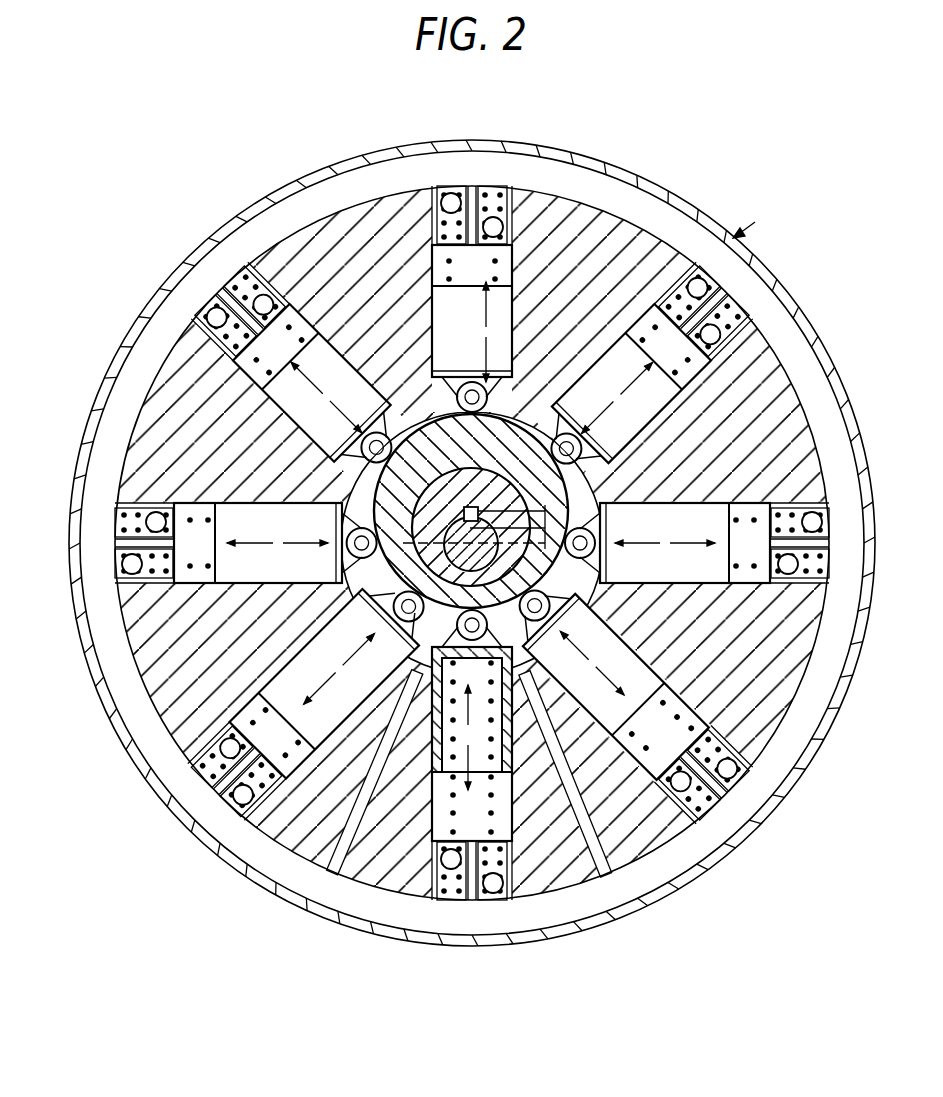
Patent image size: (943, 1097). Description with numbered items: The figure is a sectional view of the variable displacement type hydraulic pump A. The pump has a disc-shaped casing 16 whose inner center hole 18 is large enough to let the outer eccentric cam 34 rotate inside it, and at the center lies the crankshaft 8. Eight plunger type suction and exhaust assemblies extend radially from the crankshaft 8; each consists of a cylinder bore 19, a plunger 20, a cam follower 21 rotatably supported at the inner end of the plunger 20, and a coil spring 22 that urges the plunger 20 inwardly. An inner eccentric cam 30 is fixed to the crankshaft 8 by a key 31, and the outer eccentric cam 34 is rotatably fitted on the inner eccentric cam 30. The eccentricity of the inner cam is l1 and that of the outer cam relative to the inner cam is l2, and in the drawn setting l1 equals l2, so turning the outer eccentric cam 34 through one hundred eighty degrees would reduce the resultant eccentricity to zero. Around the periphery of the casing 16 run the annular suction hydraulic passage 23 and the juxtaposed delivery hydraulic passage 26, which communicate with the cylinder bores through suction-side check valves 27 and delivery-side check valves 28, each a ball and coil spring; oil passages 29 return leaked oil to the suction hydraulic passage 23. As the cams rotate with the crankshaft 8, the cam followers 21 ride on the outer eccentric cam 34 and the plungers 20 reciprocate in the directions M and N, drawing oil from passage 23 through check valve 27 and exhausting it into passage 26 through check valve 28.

The crankshaft 8 is at (121, 731).
The casing 16 is at (472, 547).
The inner center hole 18 is at (324, 532).
The cylinder bore 19 is at (432, 305).
The plunger 20 is at (600, 210).
The cam follower 21 is at (395, 300).
The coil spring 22 is at (490, 813).
The suction hydraulic passage 23 is at (552, 182).
The delivery hydraulic passage 26 is at (343, 190).
The check valve 27 is at (483, 251).
The check valve 28 is at (452, 190).
The oil passage 29 is at (343, 850).
The inner eccentric cam 30 is at (758, 768).
The key 31 is at (347, 477).
The outer eccentric cam 34 is at (828, 386).
The variable displacement type hydraulic pump A is at (754, 219).
The eccentricity of the inner eccentric cam l1 is at (550, 543).
The eccentricity of the outer eccentric cam l2 is at (550, 513).